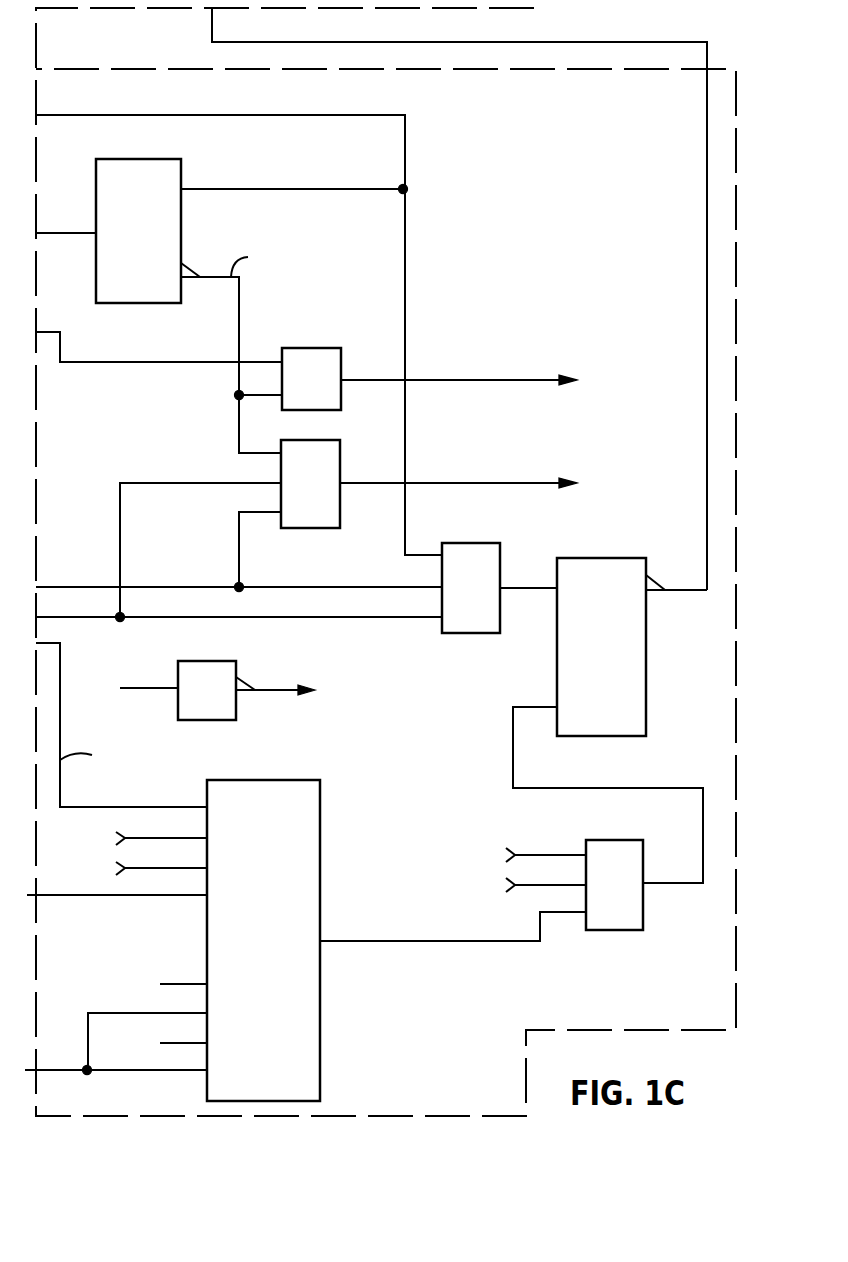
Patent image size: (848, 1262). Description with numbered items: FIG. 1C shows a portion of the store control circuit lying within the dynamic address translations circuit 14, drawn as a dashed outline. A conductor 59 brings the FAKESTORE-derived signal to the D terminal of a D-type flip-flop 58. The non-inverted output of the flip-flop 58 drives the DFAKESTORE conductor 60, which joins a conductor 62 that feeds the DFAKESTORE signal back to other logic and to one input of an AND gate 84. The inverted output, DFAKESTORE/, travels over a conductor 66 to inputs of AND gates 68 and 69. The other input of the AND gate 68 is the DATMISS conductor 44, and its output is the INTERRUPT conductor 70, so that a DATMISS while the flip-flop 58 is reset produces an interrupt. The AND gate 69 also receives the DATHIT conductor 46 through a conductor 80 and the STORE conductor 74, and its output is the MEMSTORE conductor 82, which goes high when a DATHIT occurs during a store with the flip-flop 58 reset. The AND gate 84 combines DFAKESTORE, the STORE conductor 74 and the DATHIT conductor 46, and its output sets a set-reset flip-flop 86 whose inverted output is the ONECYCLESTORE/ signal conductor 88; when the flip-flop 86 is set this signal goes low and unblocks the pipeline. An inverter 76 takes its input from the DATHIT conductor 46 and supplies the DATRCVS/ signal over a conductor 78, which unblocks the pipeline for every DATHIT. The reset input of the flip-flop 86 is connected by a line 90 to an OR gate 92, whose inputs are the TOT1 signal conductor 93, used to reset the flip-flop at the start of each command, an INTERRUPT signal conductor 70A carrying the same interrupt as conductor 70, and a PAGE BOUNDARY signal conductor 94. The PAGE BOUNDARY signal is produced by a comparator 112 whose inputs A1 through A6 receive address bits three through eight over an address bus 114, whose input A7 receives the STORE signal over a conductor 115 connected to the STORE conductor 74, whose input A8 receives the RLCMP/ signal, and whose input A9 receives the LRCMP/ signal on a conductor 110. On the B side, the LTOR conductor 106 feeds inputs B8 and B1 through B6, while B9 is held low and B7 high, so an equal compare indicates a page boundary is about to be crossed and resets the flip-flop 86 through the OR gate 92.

The dynamic address translations circuit (DAT) 14 is at (150, 68).
The D-type flip-flop 58 is at (133, 160).
The conductor 59 is at (77, 232).
The DFAKESTORE conductor 60 is at (349, 188).
The conductor 62 is at (413, 134).
The conductor 66 is at (241, 316).
The AND gate 68 is at (331, 352).
The AND gate 69 is at (330, 450).
The DATMISS conductor 44 is at (139, 364).
The conductor 80 is at (150, 483).
The STORE conductor 74 is at (168, 587).
The DATHIT conductor 46 is at (272, 618).
The inverter 76 is at (183, 670).
The conductor 78 is at (272, 692).
The AND gate 84 is at (460, 548).
The set-reset flip-flop 86 is at (612, 565).
The ONECYCLESTORE/ signal conductor 88 is at (707, 276).
The INTERRUPT conductor 70 is at (462, 381).
The MEMSTORE conductor 82 is at (491, 485).
The line 90 is at (513, 762).
The OR gate 92 is at (610, 843).
The TOT1 signal conductor 93 is at (566, 855).
The INTERRUPT signal conductor 70A is at (566, 885).
The PAGE BOUNDARY signal conductor 94 is at (455, 942).
The comparator 112 is at (318, 791).
The address bus 114 is at (62, 691).
The conductor 115 is at (130, 836).
The conductor 110 is at (105, 896).
The LTOR conductor 106 is at (100, 1010).